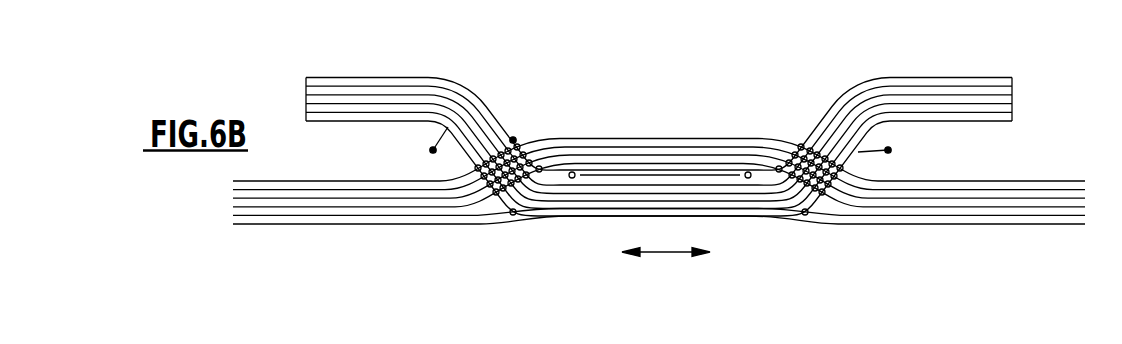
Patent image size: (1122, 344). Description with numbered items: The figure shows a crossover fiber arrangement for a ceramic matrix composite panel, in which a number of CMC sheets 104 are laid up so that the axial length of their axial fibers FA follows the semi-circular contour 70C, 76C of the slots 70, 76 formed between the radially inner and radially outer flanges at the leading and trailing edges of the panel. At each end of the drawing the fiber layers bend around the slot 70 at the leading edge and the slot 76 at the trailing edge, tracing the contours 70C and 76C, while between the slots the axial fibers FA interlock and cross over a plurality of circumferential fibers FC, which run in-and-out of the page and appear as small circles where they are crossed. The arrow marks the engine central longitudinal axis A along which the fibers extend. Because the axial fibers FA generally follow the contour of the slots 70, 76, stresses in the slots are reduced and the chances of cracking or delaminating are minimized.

The slot 70 is at (412, 172).
The semi-circular contour 70C is at (433, 150).
The slot 76 is at (1001, 168).
The semi-circular contour 76C is at (888, 150).
The CMC sheets 104 is at (458, 87).
The circumferential fibers FC is at (514, 139).
The axial fibers FA is at (468, 127).
The engine central longitudinal axis A is at (668, 253).